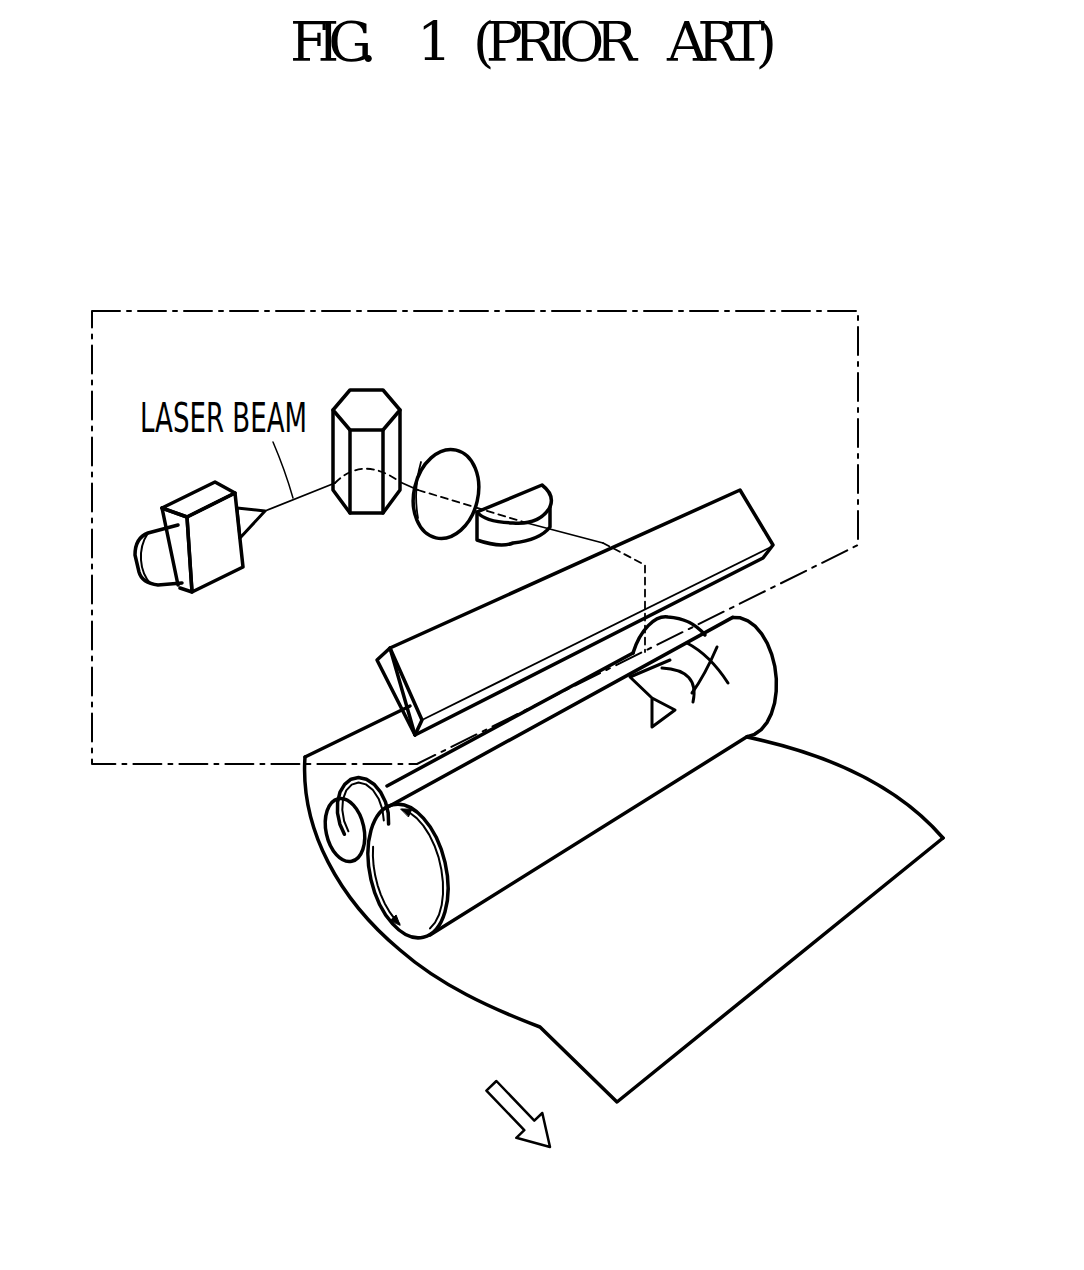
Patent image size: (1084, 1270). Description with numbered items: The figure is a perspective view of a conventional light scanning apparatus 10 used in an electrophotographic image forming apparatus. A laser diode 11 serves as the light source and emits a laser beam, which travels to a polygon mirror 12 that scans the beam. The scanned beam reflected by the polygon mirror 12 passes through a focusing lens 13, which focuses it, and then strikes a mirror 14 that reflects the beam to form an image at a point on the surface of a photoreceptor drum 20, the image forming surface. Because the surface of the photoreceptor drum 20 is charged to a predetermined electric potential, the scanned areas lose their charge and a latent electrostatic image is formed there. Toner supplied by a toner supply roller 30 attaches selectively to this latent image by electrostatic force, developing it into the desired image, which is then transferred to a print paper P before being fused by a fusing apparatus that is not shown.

The light scanning apparatus 10 is at (733, 312).
The laser diode 11 is at (220, 556).
The polygon mirror 12 is at (380, 410).
The focusing lens 13 is at (458, 485).
The mirror 14 is at (730, 528).
The photoreceptor drum 20 is at (427, 897).
The toner supply roller 30 is at (343, 827).
The print paper P is at (703, 983).